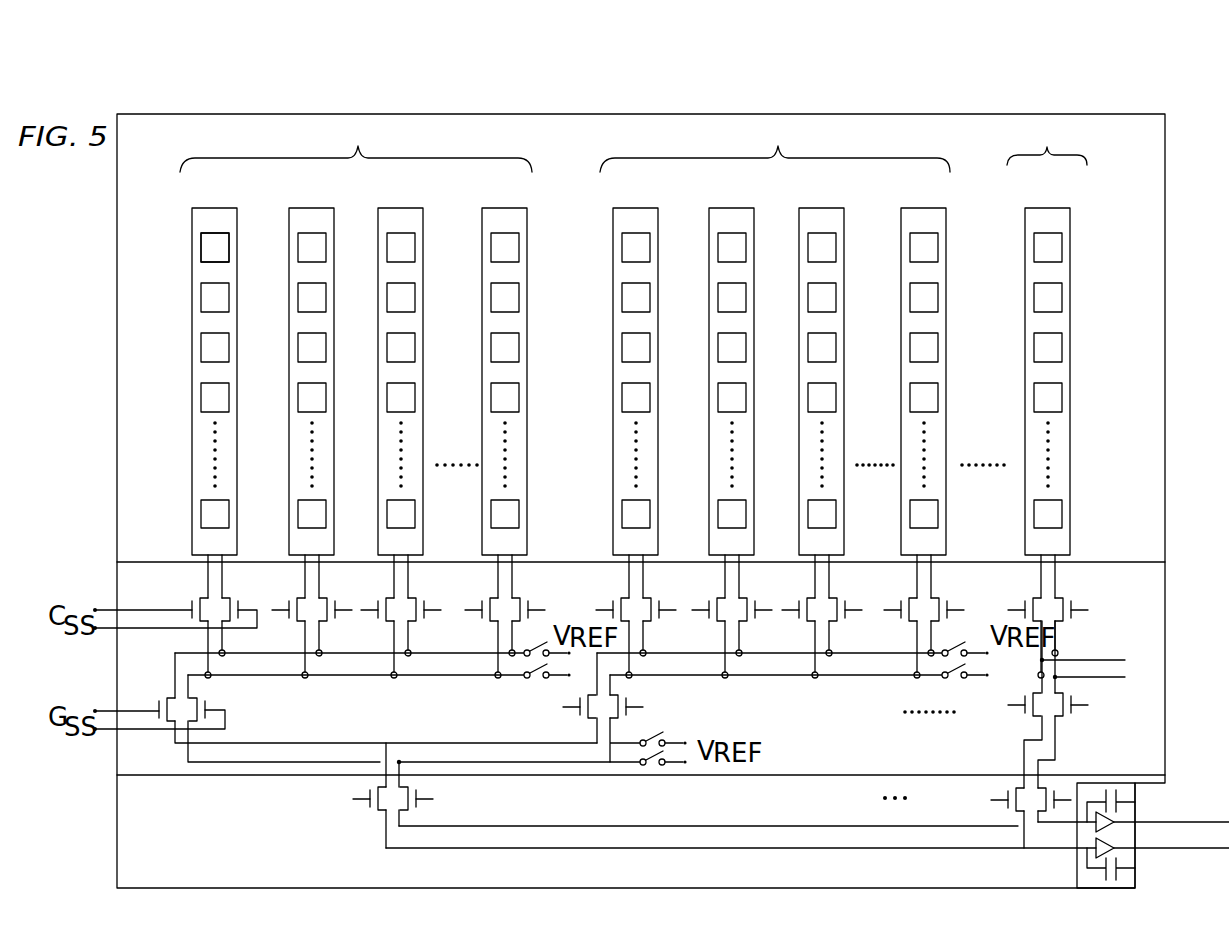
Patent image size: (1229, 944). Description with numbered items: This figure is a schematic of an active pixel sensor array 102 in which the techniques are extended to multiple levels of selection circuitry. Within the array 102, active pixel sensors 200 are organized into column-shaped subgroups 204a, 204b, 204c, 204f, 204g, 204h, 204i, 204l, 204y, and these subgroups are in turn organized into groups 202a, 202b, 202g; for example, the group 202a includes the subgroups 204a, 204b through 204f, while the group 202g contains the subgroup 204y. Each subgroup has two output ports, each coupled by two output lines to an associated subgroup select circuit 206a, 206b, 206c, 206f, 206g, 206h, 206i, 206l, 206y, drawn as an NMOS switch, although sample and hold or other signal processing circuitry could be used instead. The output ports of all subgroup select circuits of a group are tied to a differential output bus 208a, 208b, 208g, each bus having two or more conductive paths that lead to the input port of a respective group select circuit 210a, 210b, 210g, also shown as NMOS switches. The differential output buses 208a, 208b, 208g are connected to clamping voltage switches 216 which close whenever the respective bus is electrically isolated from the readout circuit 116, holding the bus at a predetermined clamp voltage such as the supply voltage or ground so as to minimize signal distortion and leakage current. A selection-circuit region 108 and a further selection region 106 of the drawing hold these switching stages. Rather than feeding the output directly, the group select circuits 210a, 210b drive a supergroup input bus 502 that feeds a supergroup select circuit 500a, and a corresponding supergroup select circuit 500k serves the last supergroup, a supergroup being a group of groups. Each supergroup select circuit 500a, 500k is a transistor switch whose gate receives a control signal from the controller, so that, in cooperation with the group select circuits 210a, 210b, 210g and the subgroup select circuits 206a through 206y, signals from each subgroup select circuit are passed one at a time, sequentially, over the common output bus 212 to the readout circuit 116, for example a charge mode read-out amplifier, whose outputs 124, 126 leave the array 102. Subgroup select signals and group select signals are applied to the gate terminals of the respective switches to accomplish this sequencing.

The array 102 is at (1165, 197).
The readout circuit region 106 is at (116, 745).
The column select circuit region 108 is at (116, 586).
The readout circuit 116 is at (1137, 856).
The first output line 124 is at (1198, 820).
The second output line 126 is at (1201, 843).
The active pixel sensor 200 is at (201, 254).
The group 202a is at (356, 144).
The group 202b is at (775, 144).
The group 202g is at (1047, 141).
The subgroup 204a is at (215, 361).
The subgroup 204b is at (312, 361).
The subgroup 204c is at (401, 361).
The subgroup 204f is at (506, 361).
The subgroup 204g is at (636, 361).
The subgroup 204h is at (732, 361).
The subgroup 204i is at (822, 361).
The subgroup 204l is at (923, 361).
The subgroup 204y is at (1048, 361).
The subgroup select circuit 206a is at (176, 616).
The subgroup select circuit 206b is at (296, 616).
The subgroup select circuit 206c is at (386, 616).
The subgroup select circuit 206f is at (491, 616).
The subgroup select circuit 206g is at (621, 616).
The subgroup select circuit 206h is at (717, 616).
The subgroup select circuit 206i is at (809, 616).
The subgroup select circuit 206l is at (911, 616).
The subgroup select circuit 206y is at (1033, 616).
The differential output bus 208a is at (352, 650).
The differential output bus 208b is at (770, 648).
The differential output bus 208g is at (1094, 684).
The group select circuit 210a is at (346, 707).
The group select circuit 210b is at (579, 707).
The group select circuit 210g is at (1026, 704).
The common output bus 212 is at (753, 818).
The clamping voltage switches 216 is at (543, 678).
The supergroup select circuit 500a is at (364, 798).
The supergroup select circuit 500k is at (1000, 816).
The supergroup input bus 502 is at (468, 733).